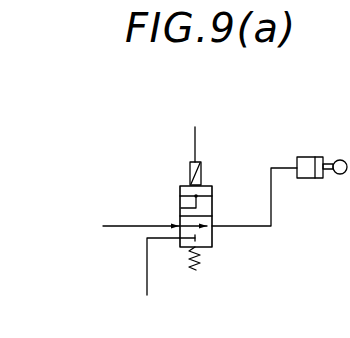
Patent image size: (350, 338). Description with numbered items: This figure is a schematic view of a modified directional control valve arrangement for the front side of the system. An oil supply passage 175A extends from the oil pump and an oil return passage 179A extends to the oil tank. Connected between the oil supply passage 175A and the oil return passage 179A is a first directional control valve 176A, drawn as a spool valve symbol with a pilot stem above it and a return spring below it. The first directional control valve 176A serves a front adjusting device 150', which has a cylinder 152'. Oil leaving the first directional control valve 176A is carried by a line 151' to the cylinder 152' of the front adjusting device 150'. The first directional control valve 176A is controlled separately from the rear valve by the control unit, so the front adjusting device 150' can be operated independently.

The oil supply passage 175A is at (127, 225).
The first directional control valve 176A is at (212, 208).
The oil return passage 179A is at (147, 267).
The front adjusting device 150' is at (321, 160).
The passage 151' is at (254, 227).
The cylinder 152' is at (316, 194).